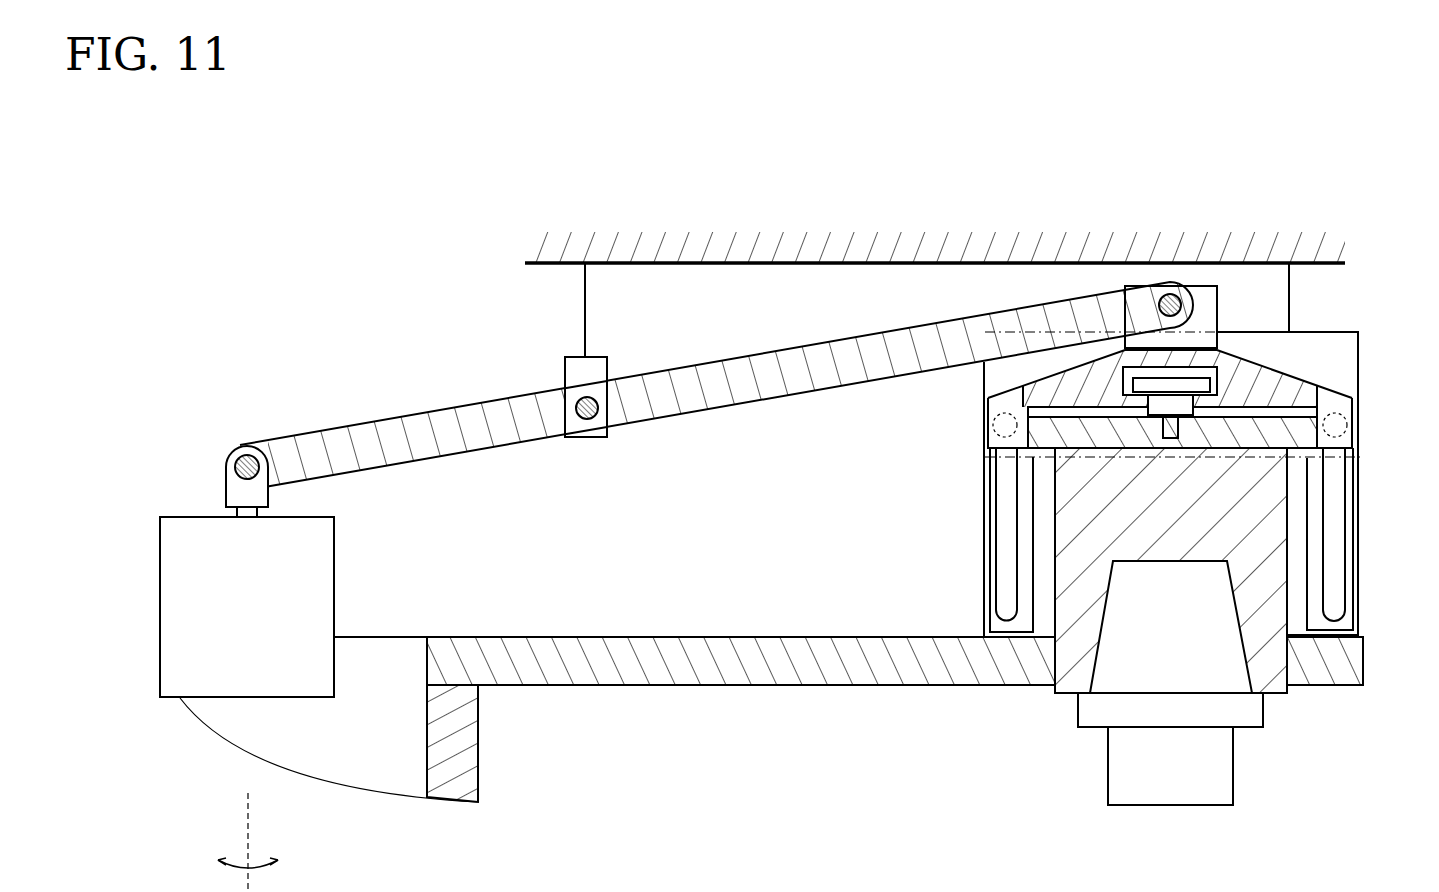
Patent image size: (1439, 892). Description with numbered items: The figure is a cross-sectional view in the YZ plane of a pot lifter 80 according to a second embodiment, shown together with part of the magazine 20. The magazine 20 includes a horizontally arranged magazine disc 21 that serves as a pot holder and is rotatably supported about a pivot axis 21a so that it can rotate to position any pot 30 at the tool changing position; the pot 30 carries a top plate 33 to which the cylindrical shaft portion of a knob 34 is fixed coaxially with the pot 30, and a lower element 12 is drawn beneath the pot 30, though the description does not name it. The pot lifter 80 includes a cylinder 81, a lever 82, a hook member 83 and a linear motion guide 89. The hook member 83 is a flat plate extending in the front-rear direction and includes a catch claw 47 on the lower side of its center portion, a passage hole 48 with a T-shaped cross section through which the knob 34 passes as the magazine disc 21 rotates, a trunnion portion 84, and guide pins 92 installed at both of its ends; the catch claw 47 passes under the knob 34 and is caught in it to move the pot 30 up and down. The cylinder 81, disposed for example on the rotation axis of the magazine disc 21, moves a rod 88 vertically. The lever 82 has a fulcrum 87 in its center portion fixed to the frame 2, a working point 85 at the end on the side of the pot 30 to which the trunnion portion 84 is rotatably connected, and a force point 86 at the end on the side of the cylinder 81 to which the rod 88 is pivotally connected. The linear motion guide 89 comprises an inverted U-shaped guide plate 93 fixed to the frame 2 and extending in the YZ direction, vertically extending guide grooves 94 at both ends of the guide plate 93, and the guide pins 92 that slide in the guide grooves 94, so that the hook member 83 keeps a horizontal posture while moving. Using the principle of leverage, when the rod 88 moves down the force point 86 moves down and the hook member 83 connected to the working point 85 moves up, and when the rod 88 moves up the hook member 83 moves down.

The frame 2 is at (522, 246).
The rotary shaft 12 is at (1233, 773).
The magazine 20 is at (804, 702).
The magazine disc 21 is at (768, 637).
The pivot axis 21a is at (250, 838).
The pot 30 is at (1280, 697).
The top plate 33 is at (1040, 456).
The knob 34 is at (1128, 378).
The catch claw 47 is at (1212, 403).
The passage hole 48 is at (1220, 375).
The pot lifter 80 is at (676, 440).
The cylinder 81 is at (334, 540).
The lever 82 is at (700, 366).
The hook member 83 is at (1211, 355).
The trunnion portion 84 is at (1217, 303).
The working point 85 is at (1163, 296).
The force point 86 is at (246, 447).
The fulcrum 87 is at (589, 419).
The rod 88 is at (232, 505).
The linear motion guide 89 is at (1209, 484).
The guide pin 92 is at (1343, 418).
The guide plate 93 is at (1398, 415).
The guide groove 94 is at (1338, 506).